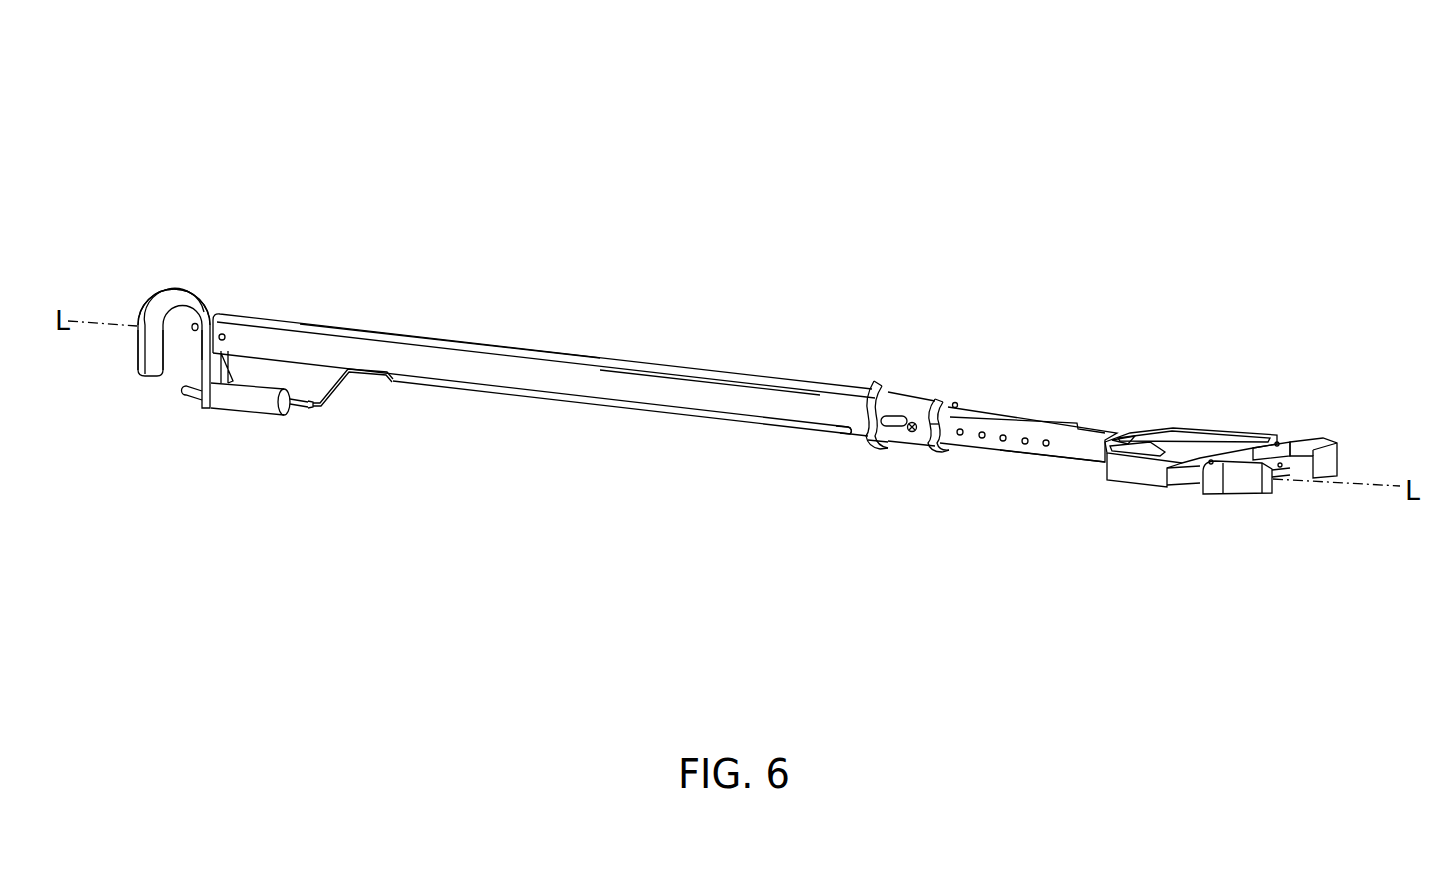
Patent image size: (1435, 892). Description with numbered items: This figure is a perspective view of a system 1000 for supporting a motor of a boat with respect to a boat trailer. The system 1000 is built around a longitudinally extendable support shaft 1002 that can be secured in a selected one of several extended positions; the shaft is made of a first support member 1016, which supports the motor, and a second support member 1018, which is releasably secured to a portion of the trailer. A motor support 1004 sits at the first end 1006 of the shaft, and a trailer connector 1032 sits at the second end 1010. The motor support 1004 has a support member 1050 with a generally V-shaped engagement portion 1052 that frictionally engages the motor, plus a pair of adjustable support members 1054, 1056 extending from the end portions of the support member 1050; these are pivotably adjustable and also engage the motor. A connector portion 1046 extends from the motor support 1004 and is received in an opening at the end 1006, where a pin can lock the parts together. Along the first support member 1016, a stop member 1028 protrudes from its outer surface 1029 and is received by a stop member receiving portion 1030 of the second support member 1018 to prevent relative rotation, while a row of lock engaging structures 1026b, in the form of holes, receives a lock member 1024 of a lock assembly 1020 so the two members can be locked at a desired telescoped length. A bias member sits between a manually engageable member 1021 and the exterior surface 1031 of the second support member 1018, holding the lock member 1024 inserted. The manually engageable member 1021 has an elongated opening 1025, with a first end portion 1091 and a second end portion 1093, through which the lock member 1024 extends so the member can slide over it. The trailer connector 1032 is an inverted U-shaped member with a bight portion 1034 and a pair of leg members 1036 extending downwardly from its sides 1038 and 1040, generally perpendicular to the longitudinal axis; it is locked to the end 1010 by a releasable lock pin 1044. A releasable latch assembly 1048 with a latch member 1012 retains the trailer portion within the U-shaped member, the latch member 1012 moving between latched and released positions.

The system 1000 is at (945, 170).
The support shaft 1002 is at (638, 360).
The motor support 1004 is at (1218, 428).
The first end 1006 is at (1119, 438).
The second end 1010 is at (218, 312).
The latch member 1012 is at (192, 397).
The first support member 1016 is at (1087, 417).
The second support member 1018 is at (467, 340).
The lock assembly 1020 is at (906, 388).
The manually engageable member 1021 is at (850, 435).
The lock member 1024 is at (911, 432).
The elongated opening 1025 is at (883, 445).
The lock engaging structures 1026b is at (1046, 446).
The stop member 1028 is at (1047, 420).
The outer surface 1029 is at (1080, 452).
The stop member receiving portion 1030 is at (955, 403).
The exterior surface 1031 is at (938, 400).
The trailer connector 1032 is at (148, 302).
The bight portion 1034 is at (183, 287).
The leg members 1036 is at (135, 350).
The side of bight portion 1038 is at (137, 315).
The side of bight portion 1040 is at (199, 326).
The lock pin 1044 is at (228, 341).
The connector portion 1046 is at (1126, 435).
The latch assembly 1048 is at (263, 407).
The support member 1050 is at (1140, 475).
The V-shaped engagement portion 1052 is at (1225, 452).
The adjustable support member 1054 is at (1338, 452).
The adjustable support member 1056 is at (1243, 485).
The first end portion 1091 is at (957, 403).
The second end portion 1093 is at (875, 442).